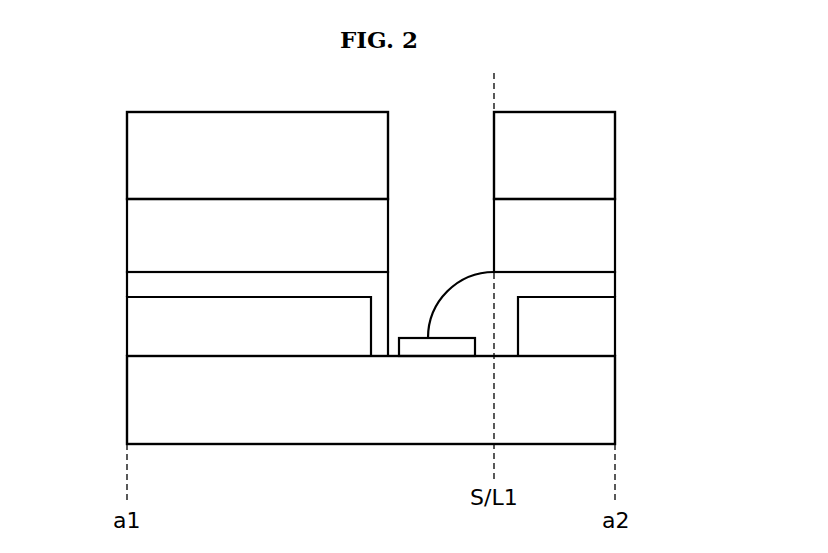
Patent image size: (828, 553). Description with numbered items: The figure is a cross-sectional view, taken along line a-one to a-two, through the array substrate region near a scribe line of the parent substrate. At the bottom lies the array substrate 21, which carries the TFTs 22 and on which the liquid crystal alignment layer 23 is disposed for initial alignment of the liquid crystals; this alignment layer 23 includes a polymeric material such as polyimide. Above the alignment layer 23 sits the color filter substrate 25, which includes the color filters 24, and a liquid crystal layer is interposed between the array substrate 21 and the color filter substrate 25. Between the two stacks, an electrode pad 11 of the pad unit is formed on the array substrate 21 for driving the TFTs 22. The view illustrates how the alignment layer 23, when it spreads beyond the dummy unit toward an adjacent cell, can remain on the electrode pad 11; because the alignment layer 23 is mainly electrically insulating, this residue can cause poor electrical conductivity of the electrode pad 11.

The electrode pad 11 is at (436, 348).
The array substrate 21 is at (603, 403).
The TFTs 22 is at (143, 328).
The liquid crystal alignment layer 23 is at (137, 283).
The color filters 24 is at (143, 235).
The color filter substrate 25 is at (143, 159).